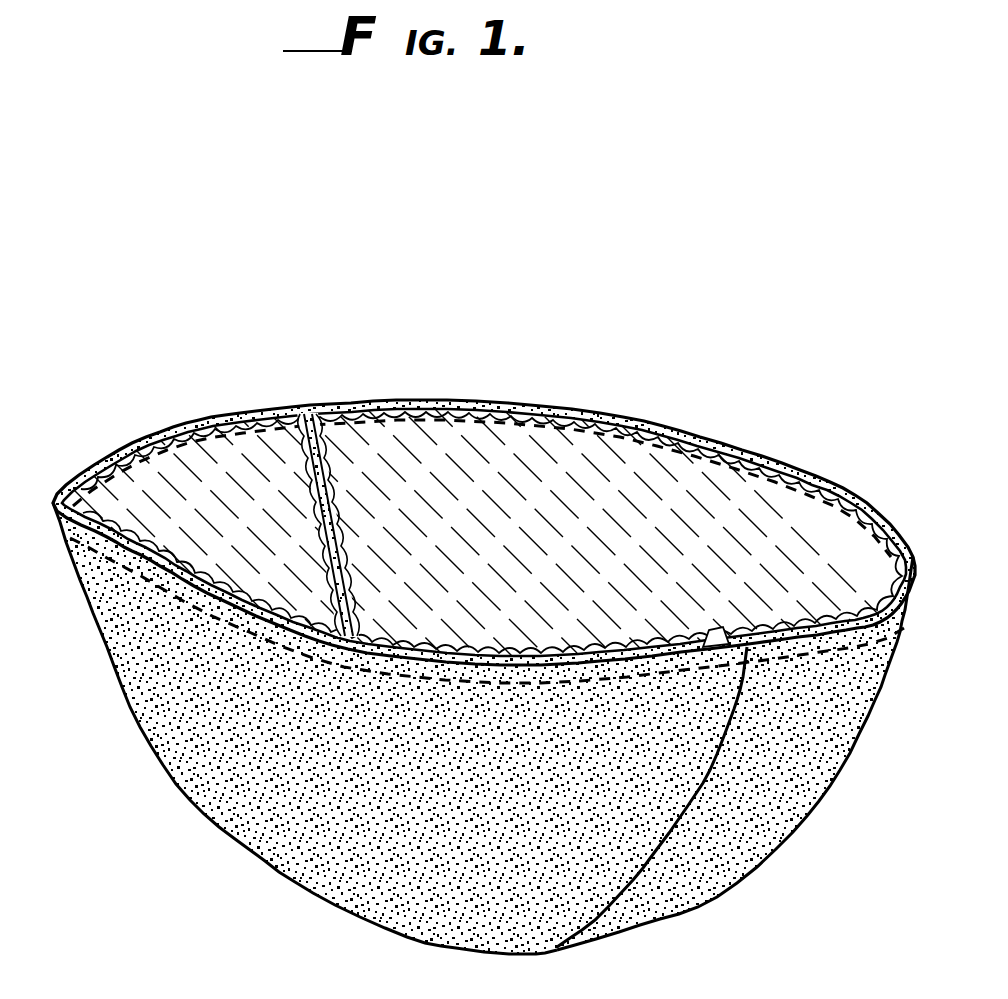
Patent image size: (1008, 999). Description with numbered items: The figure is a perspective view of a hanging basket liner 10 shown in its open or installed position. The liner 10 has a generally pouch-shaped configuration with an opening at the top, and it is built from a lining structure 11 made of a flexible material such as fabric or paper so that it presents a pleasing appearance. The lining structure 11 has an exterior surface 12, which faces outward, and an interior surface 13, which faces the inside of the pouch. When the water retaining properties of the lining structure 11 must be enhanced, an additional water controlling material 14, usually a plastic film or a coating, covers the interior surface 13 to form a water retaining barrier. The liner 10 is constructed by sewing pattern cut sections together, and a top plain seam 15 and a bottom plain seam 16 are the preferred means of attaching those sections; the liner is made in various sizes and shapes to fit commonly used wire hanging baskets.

The hanging basket liner 10 is at (139, 754).
The lining structure 11 is at (360, 837).
The exterior surface 12 is at (783, 830).
The interior surface 13 is at (408, 440).
The additional water controlling material 14 is at (843, 593).
The top plain seam 15 is at (107, 577).
The bottom plain seam 16 is at (290, 412).